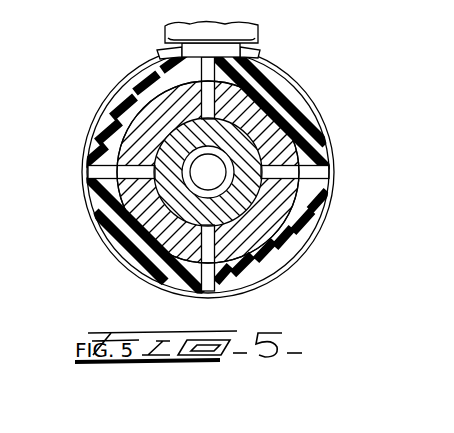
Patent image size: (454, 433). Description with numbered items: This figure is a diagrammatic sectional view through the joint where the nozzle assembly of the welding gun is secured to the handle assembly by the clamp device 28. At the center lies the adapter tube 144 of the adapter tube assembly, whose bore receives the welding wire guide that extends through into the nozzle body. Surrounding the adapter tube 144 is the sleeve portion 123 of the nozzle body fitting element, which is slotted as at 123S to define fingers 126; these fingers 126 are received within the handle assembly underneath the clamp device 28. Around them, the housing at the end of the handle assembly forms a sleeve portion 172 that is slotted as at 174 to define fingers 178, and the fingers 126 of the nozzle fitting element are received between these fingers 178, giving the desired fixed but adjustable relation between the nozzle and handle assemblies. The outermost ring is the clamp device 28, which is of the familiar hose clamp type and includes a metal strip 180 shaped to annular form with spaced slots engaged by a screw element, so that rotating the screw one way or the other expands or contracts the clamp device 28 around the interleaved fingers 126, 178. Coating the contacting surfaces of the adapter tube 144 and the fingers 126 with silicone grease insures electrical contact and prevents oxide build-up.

The clamp device 28 is at (134, 49).
The fingers 178 is at (116, 106).
The slots 174 is at (212, 71).
The sleeve portion 172 is at (286, 84).
The sleeve portion 123 is at (272, 103).
The fingers 126 is at (267, 121).
The slots 123S is at (312, 144).
The metal strip 180 is at (325, 193).
The adapter tube 144 is at (153, 195).